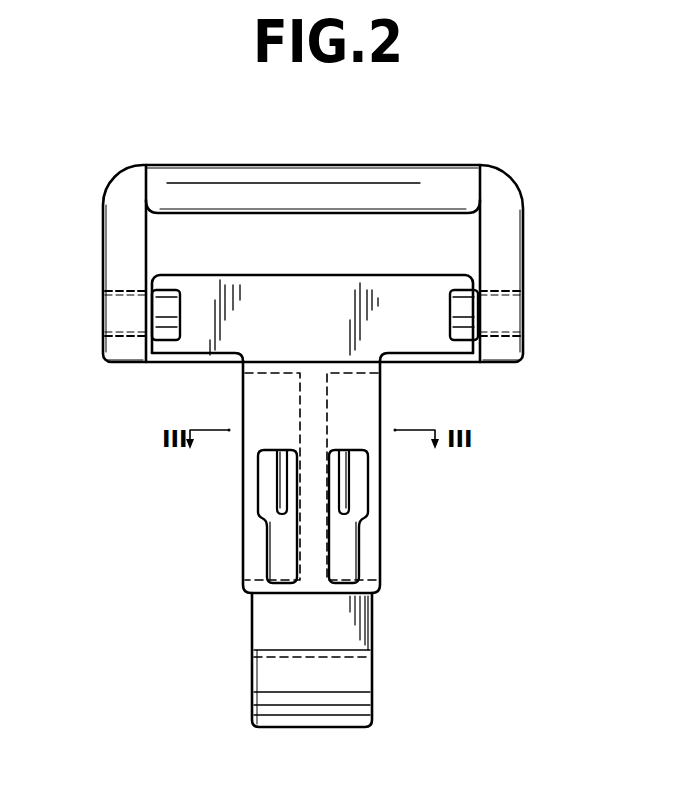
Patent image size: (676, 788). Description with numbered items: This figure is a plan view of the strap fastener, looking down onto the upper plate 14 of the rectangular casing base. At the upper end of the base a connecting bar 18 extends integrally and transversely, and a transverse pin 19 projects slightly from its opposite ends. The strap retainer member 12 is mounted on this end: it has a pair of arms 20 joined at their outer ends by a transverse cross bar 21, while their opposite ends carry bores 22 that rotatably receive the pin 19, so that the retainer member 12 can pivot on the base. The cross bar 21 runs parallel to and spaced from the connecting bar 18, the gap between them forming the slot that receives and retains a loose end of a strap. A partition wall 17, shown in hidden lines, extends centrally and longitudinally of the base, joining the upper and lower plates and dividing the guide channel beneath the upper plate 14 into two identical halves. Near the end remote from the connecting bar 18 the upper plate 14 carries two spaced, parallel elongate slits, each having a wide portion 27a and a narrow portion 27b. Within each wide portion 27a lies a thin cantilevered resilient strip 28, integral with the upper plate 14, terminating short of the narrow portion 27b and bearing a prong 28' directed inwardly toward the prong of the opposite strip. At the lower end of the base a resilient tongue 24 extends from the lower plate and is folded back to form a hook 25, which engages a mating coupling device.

The strap retainer member 12 is at (412, 158).
The upper plate 14 is at (376, 397).
The partition wall 17 is at (300, 383).
The connecting bar 18 is at (295, 281).
The transverse pin 19 is at (110, 308).
The arms 20 is at (110, 222).
The cross bar 21 is at (271, 165).
The bores 22 is at (115, 334).
The resilient tongue 24 is at (365, 690).
The hook 25 is at (252, 656).
The wide portion 27a is at (262, 507).
The narrow portion 27b is at (277, 568).
The cantilevered resilient strips 28 is at (315, 480).
The prongs 28' is at (319, 551).